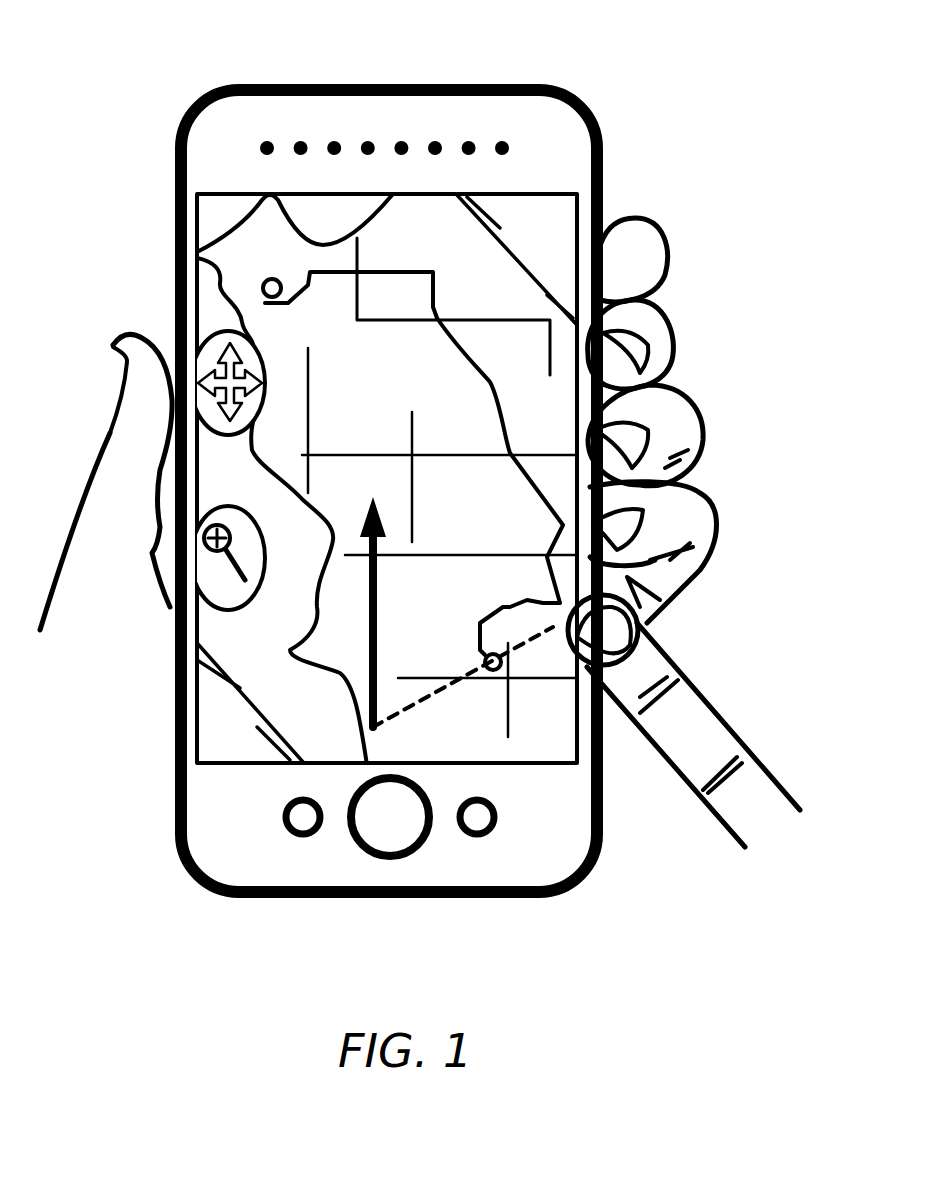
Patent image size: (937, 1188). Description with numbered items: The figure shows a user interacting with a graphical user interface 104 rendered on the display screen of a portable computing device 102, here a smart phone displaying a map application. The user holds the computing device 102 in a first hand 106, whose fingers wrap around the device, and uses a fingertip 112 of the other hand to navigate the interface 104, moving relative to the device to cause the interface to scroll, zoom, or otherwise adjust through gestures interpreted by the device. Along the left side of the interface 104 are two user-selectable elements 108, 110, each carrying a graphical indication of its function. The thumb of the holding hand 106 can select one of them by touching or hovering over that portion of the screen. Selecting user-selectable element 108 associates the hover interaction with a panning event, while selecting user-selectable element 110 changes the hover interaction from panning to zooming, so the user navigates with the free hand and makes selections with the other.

The computing device 102 is at (490, 83).
The graphical user interface 104 is at (498, 285).
The first hand 106 is at (127, 450).
The user-selectable element 108 is at (212, 356).
The user-selectable element 110 is at (223, 583).
The fingertip 112 is at (713, 710).